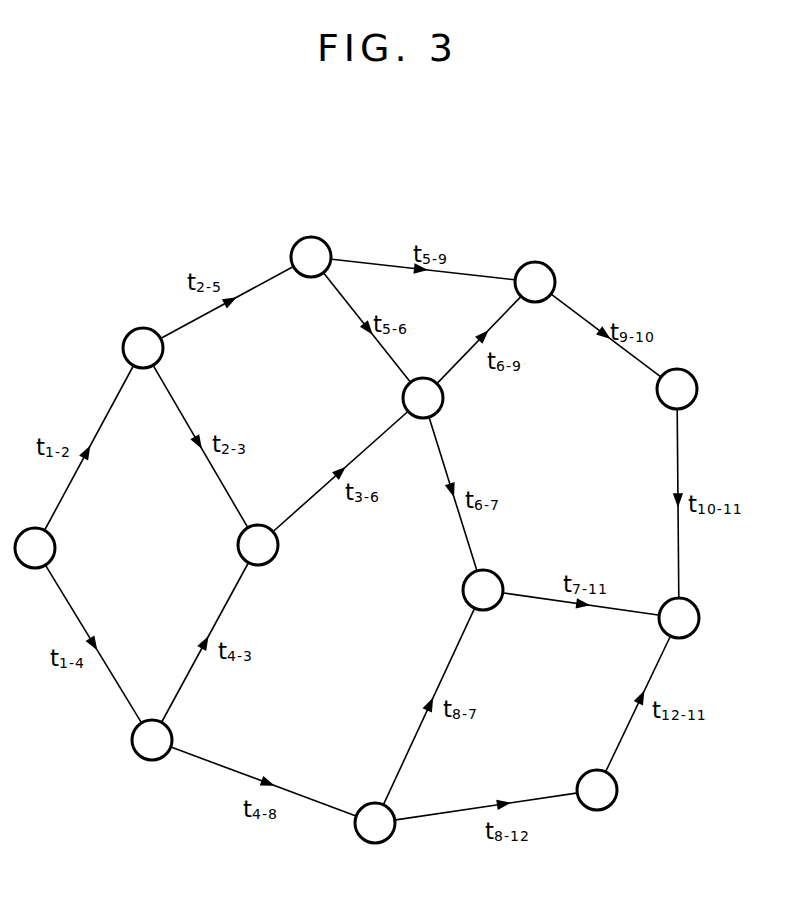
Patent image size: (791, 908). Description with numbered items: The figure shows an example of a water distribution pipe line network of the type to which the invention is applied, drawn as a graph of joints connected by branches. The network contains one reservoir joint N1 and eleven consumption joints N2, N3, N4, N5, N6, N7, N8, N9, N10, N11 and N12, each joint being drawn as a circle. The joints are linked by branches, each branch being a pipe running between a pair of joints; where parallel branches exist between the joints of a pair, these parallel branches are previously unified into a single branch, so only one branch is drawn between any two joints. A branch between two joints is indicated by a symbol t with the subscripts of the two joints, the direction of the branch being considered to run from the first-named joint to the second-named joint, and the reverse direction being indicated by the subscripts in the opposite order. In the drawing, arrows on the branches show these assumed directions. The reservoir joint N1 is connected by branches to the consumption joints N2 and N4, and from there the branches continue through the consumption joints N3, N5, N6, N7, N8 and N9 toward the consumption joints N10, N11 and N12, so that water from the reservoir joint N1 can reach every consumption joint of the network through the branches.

The reservoir joint N1 is at (35, 548).
The consumption joint N2 is at (143, 348).
The consumption joint N3 is at (258, 545).
The consumption joint N4 is at (152, 740).
The consumption joint N5 is at (311, 257).
The consumption joint N6 is at (423, 398).
The consumption joint N7 is at (483, 590).
The consumption joint N8 is at (375, 823).
The consumption joint N9 is at (535, 282).
The consumption joint N10 is at (677, 389).
The consumption joint N11 is at (679, 618).
The consumption joint N12 is at (597, 790).